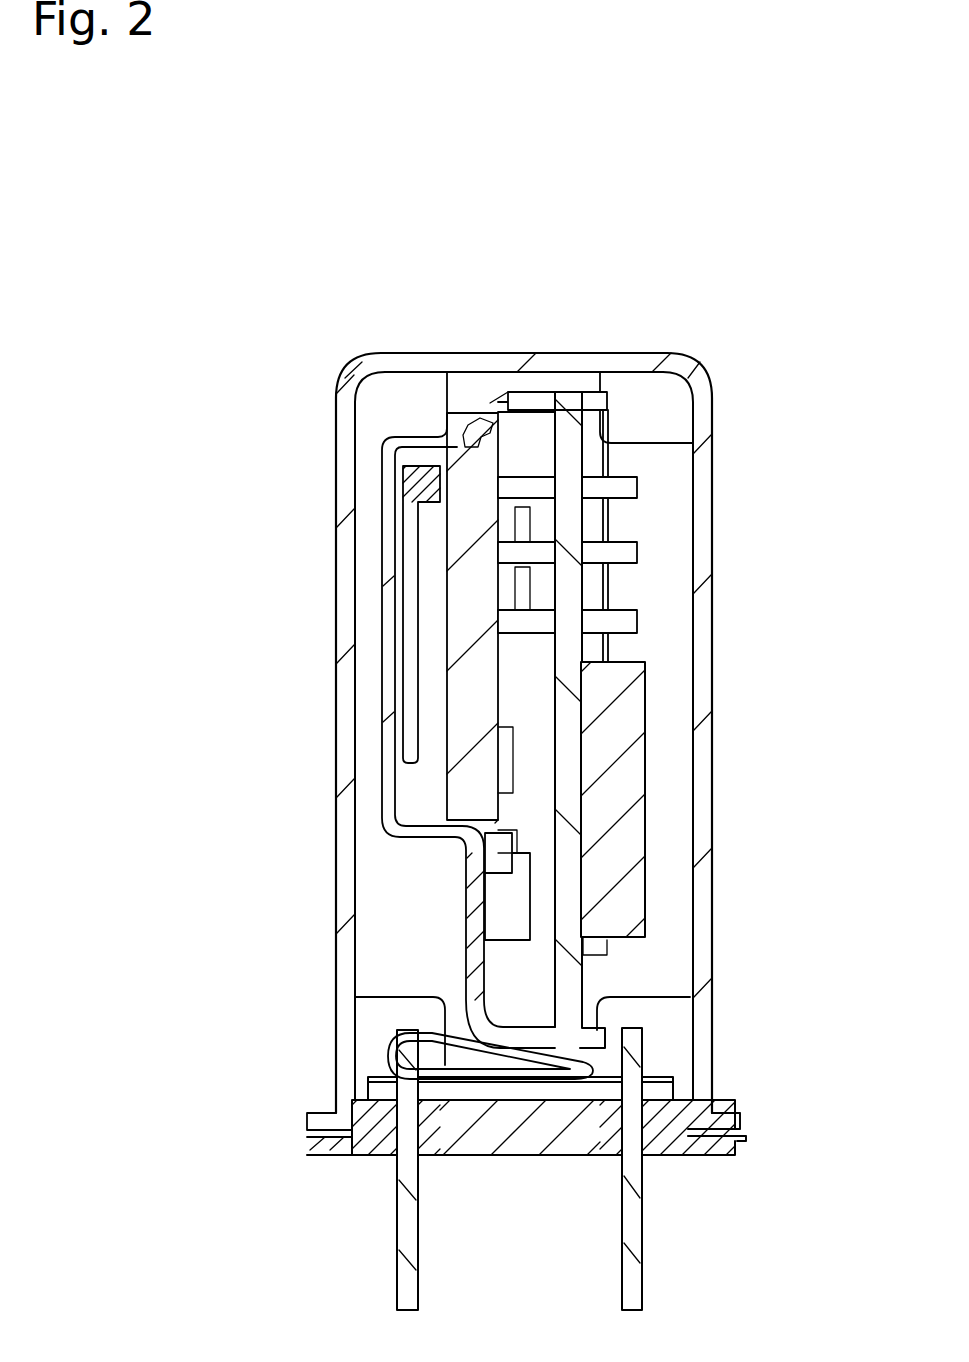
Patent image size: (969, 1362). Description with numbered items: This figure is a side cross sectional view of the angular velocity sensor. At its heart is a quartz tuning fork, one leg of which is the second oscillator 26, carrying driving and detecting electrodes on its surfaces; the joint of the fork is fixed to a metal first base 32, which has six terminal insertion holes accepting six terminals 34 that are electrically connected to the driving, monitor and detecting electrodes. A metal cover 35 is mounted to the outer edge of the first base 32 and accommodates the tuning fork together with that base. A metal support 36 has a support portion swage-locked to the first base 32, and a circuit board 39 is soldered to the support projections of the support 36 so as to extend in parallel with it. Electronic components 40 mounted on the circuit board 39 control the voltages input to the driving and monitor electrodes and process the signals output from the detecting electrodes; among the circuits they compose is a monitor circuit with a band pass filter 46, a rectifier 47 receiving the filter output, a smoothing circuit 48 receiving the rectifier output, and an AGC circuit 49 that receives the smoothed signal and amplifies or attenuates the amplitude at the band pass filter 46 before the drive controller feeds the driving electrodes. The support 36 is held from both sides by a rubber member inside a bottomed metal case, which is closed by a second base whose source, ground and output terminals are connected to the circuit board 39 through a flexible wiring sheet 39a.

The second oscillator 26 is at (408, 512).
The first base 32 is at (482, 455).
The terminals 34 is at (637, 490).
The metal cover 35 is at (388, 607).
The support 36 is at (467, 865).
The circuit board 39 is at (566, 780).
The flexible wiring sheet 39a is at (405, 1045).
The electronic components 40 is at (633, 855).
The band pass filter 46 is at (712, 605).
The rectifier 47 is at (728, 1140).
The smoothing circuit 48 is at (358, 1105).
The AGC circuit 49 is at (635, 1248).